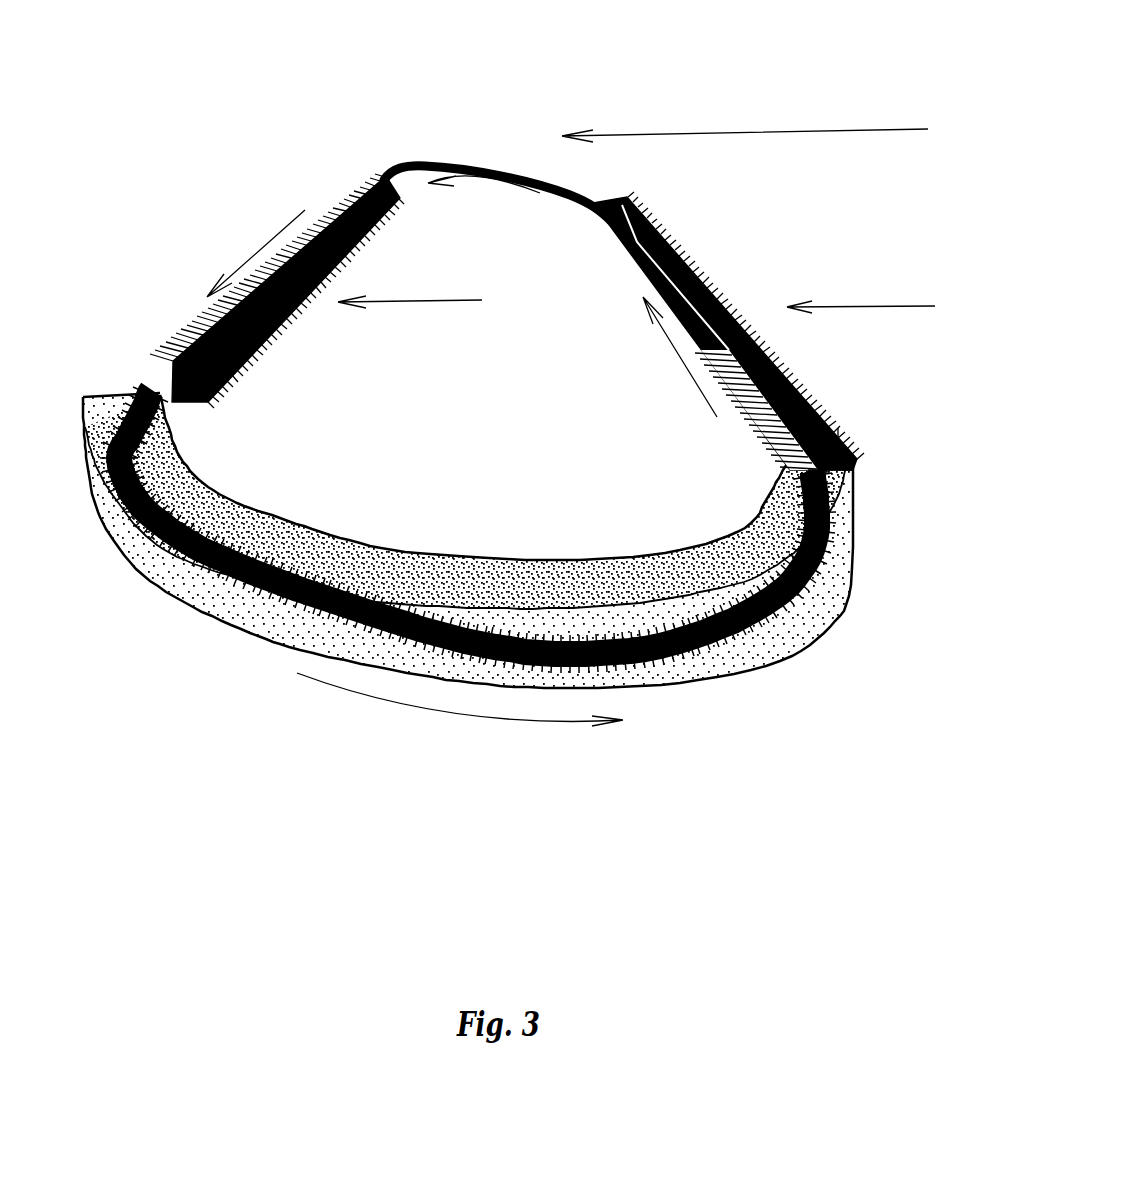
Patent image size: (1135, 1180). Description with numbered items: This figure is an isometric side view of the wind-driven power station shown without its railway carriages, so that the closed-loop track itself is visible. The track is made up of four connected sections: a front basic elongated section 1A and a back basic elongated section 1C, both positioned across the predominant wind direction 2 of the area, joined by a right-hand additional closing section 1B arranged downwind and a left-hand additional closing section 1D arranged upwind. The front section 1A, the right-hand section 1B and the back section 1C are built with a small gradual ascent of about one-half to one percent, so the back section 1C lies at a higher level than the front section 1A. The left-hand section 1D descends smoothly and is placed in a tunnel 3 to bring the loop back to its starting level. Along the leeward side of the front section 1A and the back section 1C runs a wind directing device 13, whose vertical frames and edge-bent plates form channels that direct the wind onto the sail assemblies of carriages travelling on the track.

The front basic elongated section 1A is at (642, 277).
The right-hand side additional closing section 1B is at (563, 187).
The back basic elongated section 1C is at (167, 357).
The left-hand side additional closing section 1D is at (748, 640).
The predominant wind direction 2 is at (758, 125).
The tunnel 3 is at (190, 607).
The wind directing device 13 is at (277, 317).